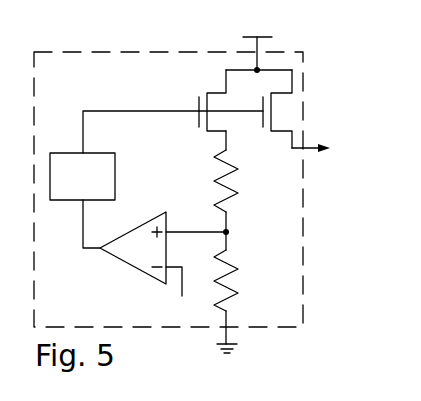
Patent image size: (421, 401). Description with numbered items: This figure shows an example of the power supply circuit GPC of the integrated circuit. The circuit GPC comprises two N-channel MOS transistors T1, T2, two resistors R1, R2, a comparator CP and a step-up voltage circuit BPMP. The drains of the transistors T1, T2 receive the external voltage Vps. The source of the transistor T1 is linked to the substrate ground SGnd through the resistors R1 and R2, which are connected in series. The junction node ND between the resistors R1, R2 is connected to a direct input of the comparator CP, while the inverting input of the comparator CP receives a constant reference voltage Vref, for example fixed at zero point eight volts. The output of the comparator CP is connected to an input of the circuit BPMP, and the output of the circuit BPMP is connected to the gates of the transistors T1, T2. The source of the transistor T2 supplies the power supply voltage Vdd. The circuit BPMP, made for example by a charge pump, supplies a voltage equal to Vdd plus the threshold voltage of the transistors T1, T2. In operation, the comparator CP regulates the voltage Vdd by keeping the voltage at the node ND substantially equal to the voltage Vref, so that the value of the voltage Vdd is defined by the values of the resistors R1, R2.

The power supply circuit GPC is at (190, 85).
The step-up voltage circuit BPMP is at (82, 176).
The comparator CP is at (159, 258).
The N-channel MOS transistor T1 is at (199, 128).
The N-channel MOS transistor T2 is at (263, 131).
The resistor R1 is at (240, 175).
The resistor R2 is at (240, 277).
The junction node ND is at (233, 234).
The external voltage Vps is at (257, 39).
The power supply voltage Vdd is at (332, 149).
The reference voltage Vref is at (183, 294).
The substrate ground SGnd is at (240, 346).